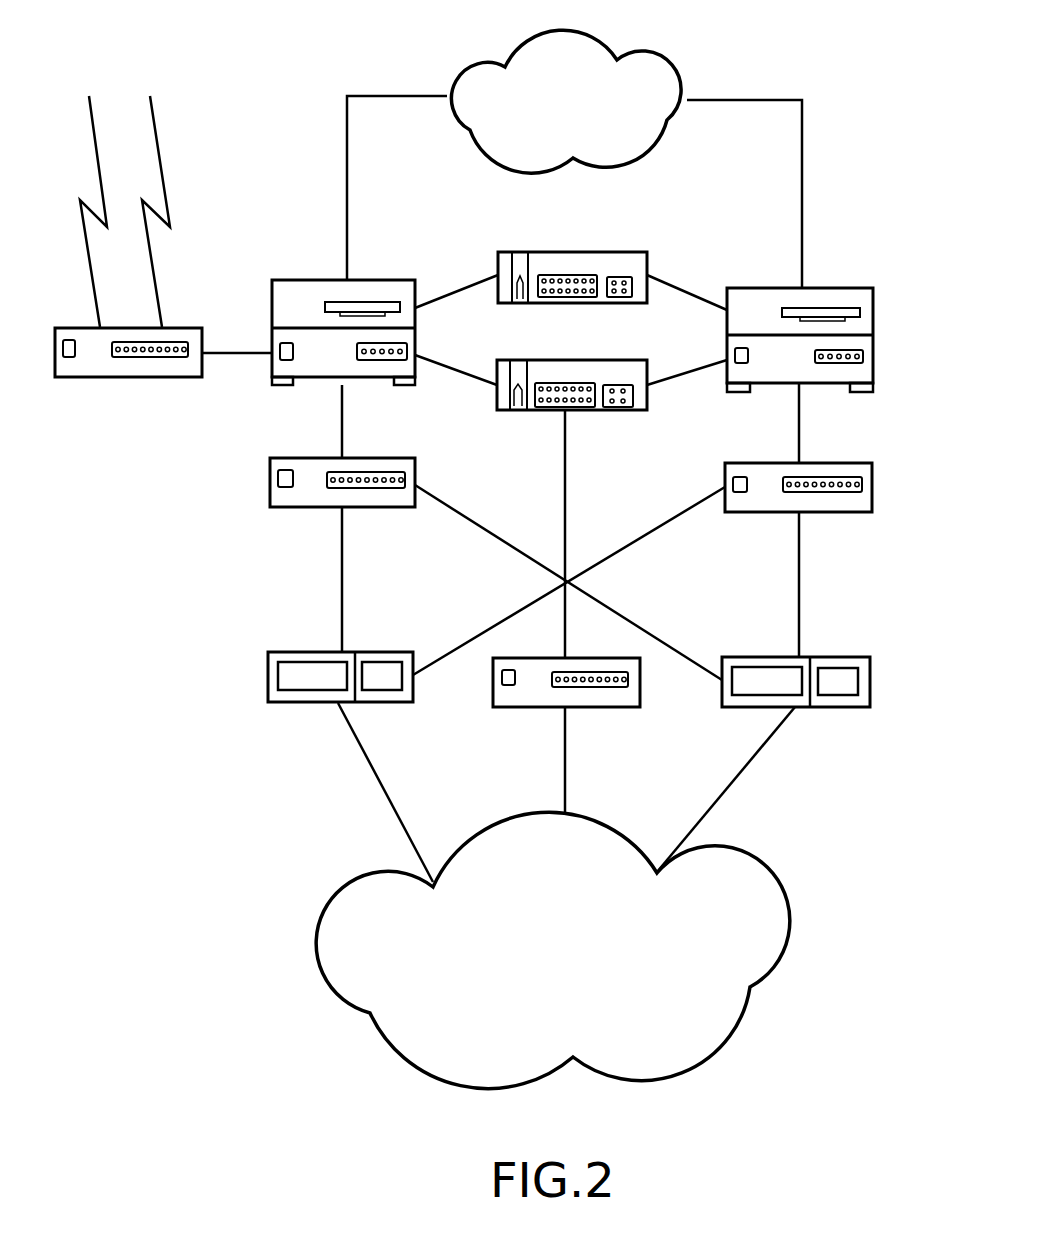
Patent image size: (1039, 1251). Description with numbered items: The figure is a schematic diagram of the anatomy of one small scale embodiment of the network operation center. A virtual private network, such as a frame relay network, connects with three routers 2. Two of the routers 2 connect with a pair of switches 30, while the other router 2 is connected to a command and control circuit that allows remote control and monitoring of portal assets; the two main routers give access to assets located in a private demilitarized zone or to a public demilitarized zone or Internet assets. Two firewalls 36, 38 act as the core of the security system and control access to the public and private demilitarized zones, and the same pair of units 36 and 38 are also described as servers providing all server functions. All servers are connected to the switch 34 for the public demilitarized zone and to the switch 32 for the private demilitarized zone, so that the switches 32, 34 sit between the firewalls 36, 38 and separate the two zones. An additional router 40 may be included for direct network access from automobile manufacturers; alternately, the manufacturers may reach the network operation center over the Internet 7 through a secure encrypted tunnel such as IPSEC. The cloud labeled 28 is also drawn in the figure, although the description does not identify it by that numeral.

The router 2 is at (292, 703).
The Internet 7 is at (578, 121).
The network (cloud) 28 is at (562, 973).
The switch 30 is at (297, 508).
The switch for the private DMZ 32 is at (597, 412).
The switch for the public DMZ 34 is at (570, 253).
The firewall 36 is at (757, 287).
The firewall 38 is at (380, 280).
The additional router 40 is at (125, 378).